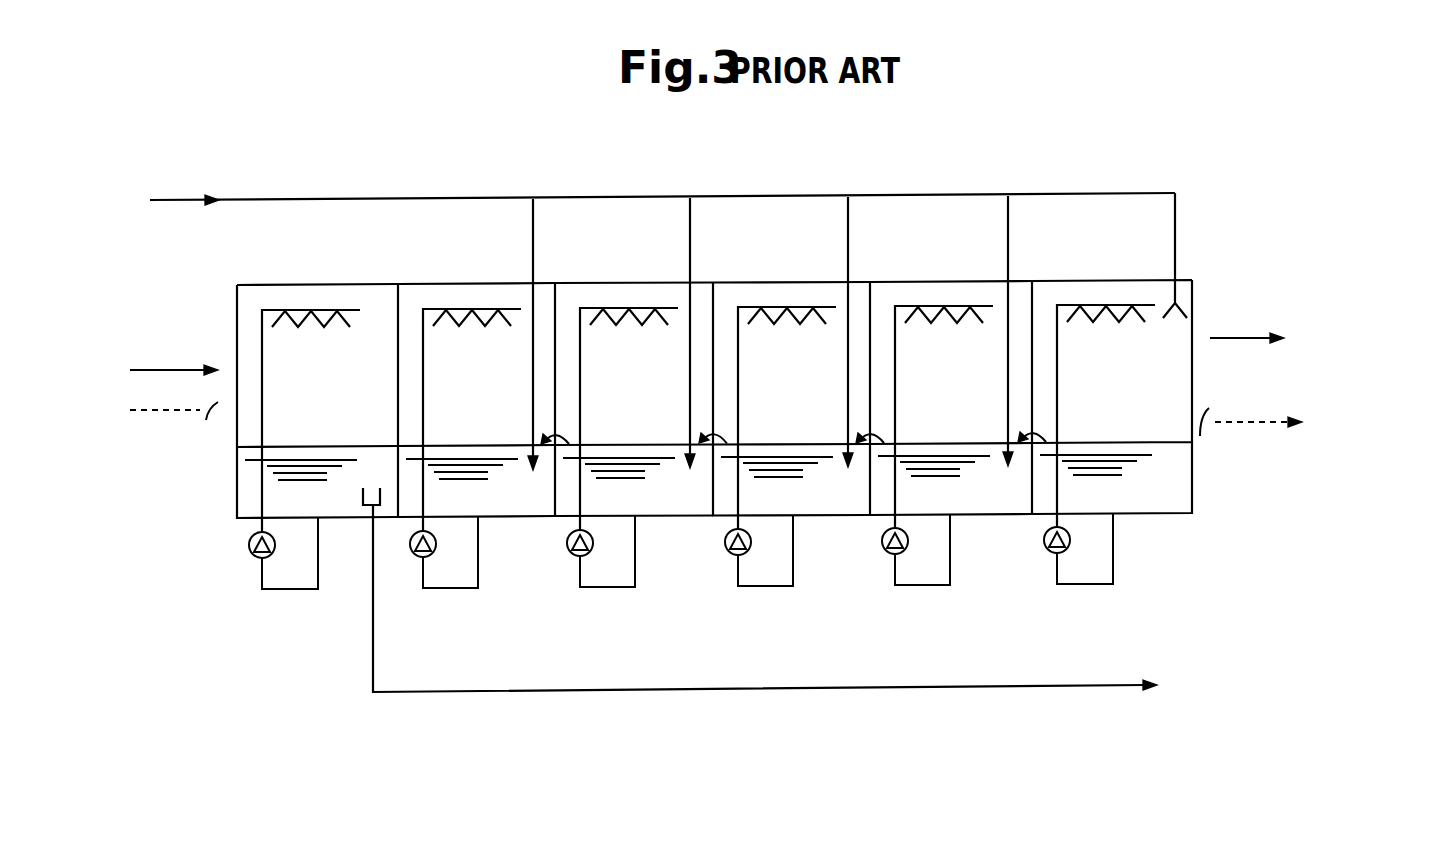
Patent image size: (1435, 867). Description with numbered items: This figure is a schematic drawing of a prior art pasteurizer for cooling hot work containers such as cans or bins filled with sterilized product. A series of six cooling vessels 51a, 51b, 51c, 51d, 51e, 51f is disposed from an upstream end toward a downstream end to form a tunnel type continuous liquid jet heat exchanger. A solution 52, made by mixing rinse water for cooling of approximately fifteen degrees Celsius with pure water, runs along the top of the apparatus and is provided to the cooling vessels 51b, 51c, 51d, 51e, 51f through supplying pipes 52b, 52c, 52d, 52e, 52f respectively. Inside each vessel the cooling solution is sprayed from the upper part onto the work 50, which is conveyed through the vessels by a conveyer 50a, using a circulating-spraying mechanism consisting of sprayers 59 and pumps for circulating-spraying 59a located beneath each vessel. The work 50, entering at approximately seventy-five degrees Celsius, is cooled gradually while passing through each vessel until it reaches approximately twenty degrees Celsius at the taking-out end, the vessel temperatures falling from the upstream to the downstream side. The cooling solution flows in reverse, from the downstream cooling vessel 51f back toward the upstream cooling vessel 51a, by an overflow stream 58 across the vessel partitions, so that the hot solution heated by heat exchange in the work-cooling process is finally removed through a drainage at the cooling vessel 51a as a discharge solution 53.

The work 50 is at (150, 372).
The conveyer 50a is at (1266, 402).
The cooling vessel 51a is at (297, 285).
The cooling vessel 51b is at (458, 284).
The cooling vessel 51c is at (612, 283).
The cooling vessel 51d is at (770, 282).
The cooling vessel 51e is at (928, 281).
The cooling vessel 51f is at (1102, 280).
The solution 52 is at (480, 197).
The supplying pipe 52b is at (533, 242).
The supplying pipe 52c is at (690, 240).
The supplying pipe 52d is at (848, 238).
The supplying pipe 52e is at (1008, 236).
The supplying pipe 52f is at (1175, 234).
The discharge solution 53 is at (781, 688).
The overflow stream 58 is at (1057, 442).
The sprayer 59 is at (262, 393).
The pump for circulating-spraying 59a is at (251, 556).